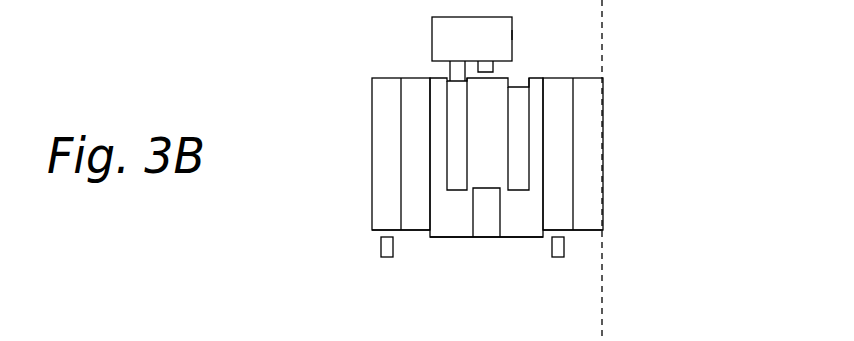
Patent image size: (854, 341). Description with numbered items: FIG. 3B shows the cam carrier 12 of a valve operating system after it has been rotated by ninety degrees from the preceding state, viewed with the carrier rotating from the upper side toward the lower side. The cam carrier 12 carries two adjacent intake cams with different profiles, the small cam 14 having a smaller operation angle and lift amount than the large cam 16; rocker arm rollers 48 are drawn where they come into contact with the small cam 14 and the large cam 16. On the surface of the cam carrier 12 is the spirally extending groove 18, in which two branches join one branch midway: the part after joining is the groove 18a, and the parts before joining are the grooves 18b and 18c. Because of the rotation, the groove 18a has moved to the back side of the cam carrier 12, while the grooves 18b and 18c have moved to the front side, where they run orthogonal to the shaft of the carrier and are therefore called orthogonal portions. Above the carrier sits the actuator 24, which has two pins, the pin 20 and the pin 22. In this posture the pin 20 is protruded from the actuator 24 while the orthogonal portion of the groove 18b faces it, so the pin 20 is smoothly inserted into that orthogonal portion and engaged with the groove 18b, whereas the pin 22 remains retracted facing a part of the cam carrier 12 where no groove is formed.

The cam carrier 12 is at (536, 244).
The intake cam 14 is at (373, 231).
The intake cam 16 is at (412, 232).
The groove 18 is at (538, 174).
The groove 18a is at (487, 218).
The groove 18b is at (457, 182).
The groove 18c is at (517, 177).
The pin 20 is at (449, 70).
The pin 22 is at (513, 84).
The actuator 24 is at (513, 35).
The rocker arm roller 48 is at (381, 247).